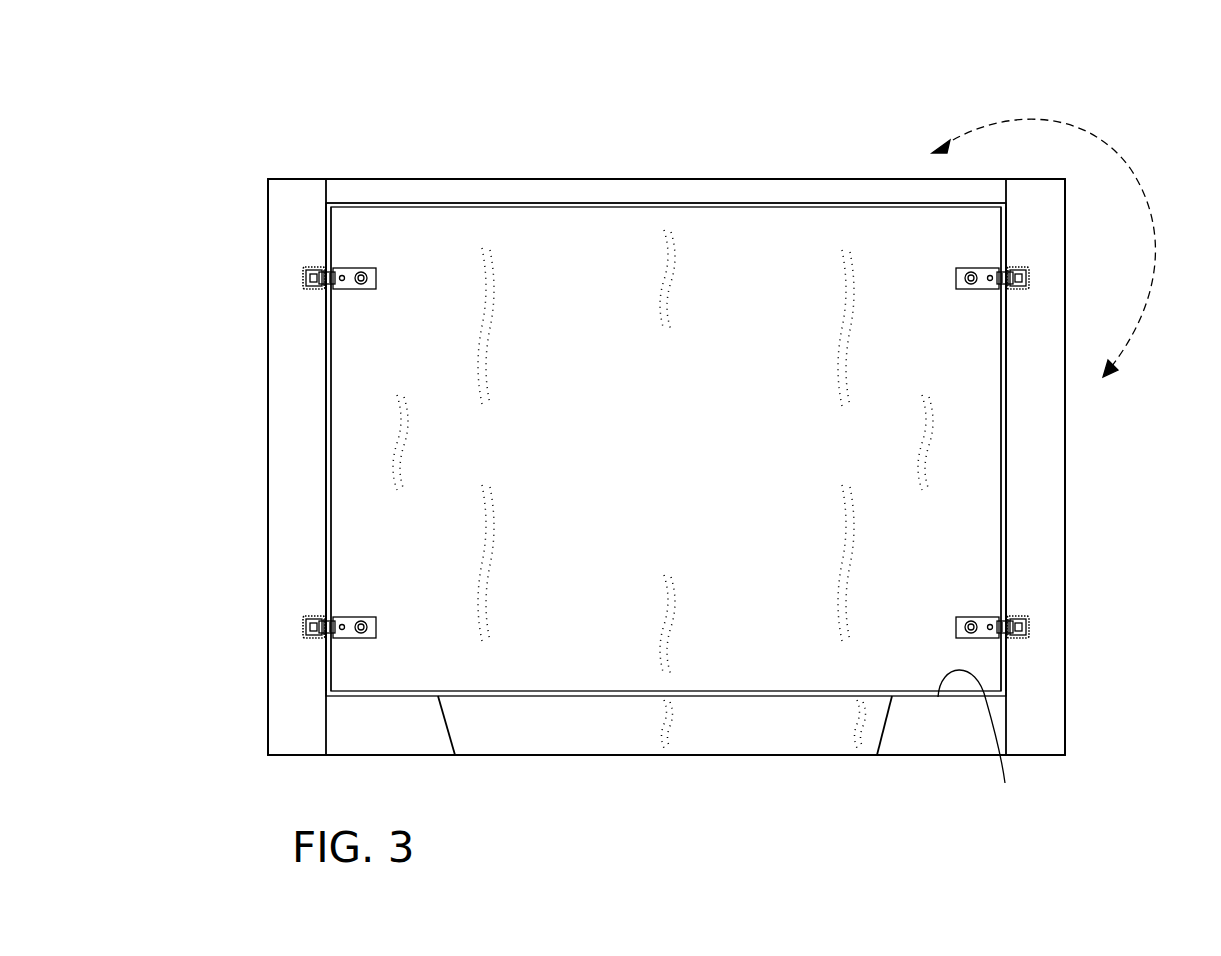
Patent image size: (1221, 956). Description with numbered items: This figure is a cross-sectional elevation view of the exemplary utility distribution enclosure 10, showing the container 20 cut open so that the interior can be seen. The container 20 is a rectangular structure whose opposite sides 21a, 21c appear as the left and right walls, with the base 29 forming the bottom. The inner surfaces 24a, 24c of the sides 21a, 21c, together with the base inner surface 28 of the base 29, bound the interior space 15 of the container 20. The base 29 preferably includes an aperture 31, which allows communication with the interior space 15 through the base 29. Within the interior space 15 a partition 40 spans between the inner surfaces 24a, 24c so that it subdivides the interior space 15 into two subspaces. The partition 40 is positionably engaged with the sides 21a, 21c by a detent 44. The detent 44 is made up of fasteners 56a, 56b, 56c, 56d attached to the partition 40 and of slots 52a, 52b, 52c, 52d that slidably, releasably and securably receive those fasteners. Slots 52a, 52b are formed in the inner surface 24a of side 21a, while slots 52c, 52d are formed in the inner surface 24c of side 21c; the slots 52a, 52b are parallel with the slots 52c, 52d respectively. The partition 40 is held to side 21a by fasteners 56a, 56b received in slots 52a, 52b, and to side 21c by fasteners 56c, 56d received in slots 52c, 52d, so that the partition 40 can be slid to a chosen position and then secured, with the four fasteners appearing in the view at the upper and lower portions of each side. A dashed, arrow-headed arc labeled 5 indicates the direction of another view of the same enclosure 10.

The utility distribution enclosure 10 is at (866, 96).
The view direction of FIG. 5 is at (1043, 248).
The interior space 15 is at (680, 458).
The container 20 is at (1066, 557).
The side 21a is at (1066, 500).
The side 21c is at (268, 500).
The inner surface 24a is at (1007, 466).
The inner surface 24c is at (325, 466).
The base inner surface 28 is at (978, 742).
The base 29 is at (910, 730).
The aperture 31 is at (520, 722).
The partition 40 is at (553, 230).
The detent 44 is at (668, 146).
The slot 52a is at (1028, 280).
The slot 52b is at (1028, 627).
The slot 52c is at (305, 279).
The slot 52d is at (305, 627).
The fastener 56a is at (980, 268).
The fastener 56b is at (980, 617).
The fastener 56c is at (352, 268).
The fastener 56d is at (352, 617).